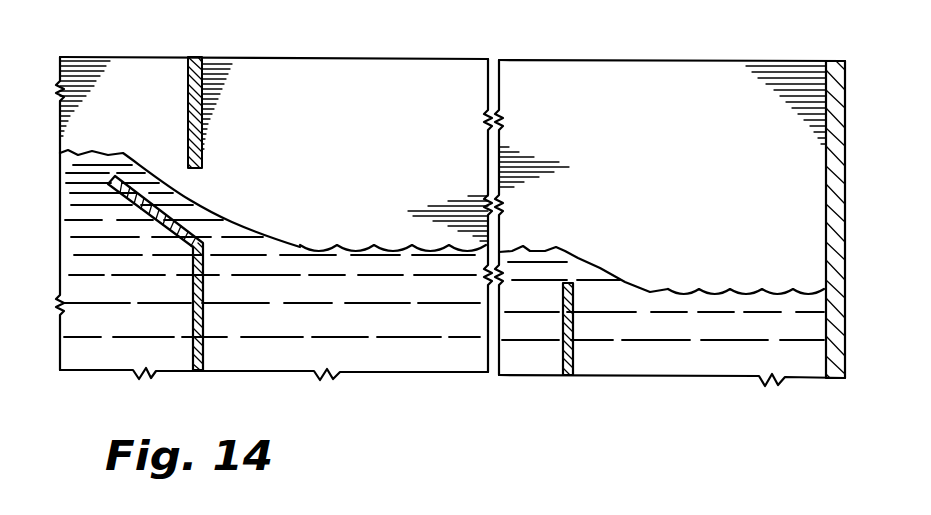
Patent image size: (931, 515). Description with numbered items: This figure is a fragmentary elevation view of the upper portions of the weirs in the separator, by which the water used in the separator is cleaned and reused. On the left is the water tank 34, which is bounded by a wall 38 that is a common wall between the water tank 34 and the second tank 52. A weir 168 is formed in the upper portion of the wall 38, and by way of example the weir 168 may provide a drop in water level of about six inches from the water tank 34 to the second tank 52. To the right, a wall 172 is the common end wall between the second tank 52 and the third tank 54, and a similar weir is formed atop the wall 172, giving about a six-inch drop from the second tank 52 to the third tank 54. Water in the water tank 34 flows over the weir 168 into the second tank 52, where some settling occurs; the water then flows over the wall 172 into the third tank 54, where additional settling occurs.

The water tank 34 is at (123, 79).
The second tank 52 is at (340, 91).
The third tank 54 is at (635, 97).
The sidewall 38 is at (207, 268).
The weir 168 is at (125, 178).
The wall 172 is at (574, 297).